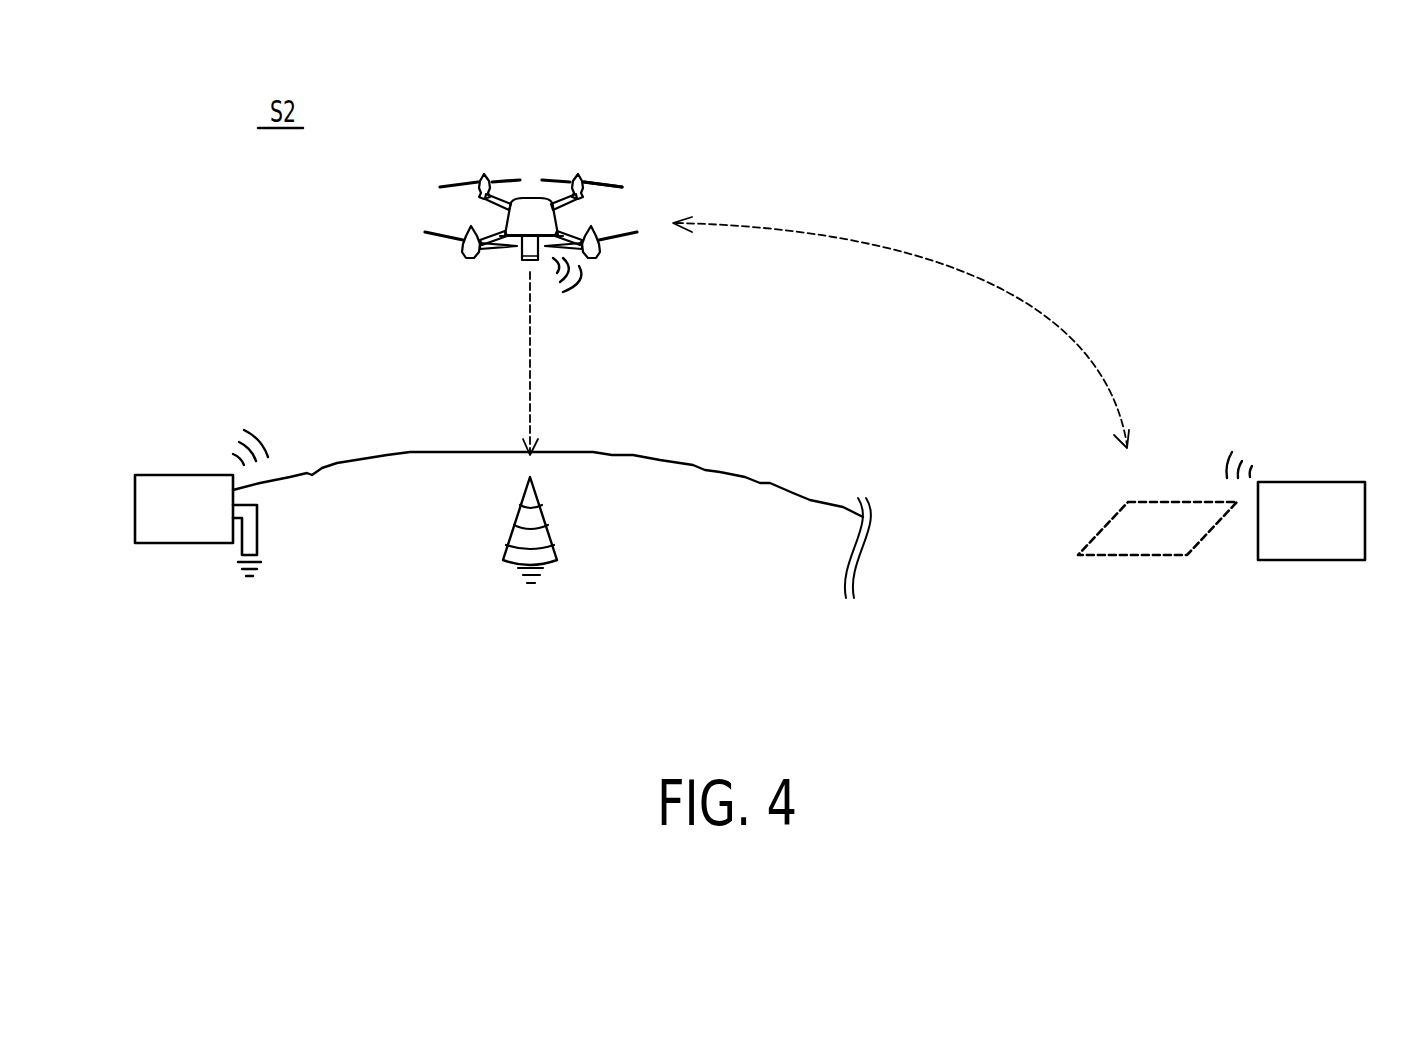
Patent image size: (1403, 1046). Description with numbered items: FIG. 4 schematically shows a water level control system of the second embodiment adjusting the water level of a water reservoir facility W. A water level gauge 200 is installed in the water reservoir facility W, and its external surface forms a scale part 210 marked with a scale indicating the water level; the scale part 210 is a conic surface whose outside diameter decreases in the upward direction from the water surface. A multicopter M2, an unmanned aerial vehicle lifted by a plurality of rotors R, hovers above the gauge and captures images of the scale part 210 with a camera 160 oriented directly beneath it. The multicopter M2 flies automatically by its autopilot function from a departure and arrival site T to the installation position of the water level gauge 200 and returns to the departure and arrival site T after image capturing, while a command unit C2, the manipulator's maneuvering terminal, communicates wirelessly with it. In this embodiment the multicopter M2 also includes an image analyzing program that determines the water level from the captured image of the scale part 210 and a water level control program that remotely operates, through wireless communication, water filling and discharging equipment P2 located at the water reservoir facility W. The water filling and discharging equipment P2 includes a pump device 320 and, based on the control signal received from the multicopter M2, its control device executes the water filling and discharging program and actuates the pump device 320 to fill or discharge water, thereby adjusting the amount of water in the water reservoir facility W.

The camera 160 is at (528, 247).
The water level gauge 200 is at (454, 492).
The scale part 210 is at (530, 530).
The pump device 320 is at (272, 540).
The multicopter M2 is at (547, 234).
The rotor R is at (627, 233).
The water reservoir facility W is at (552, 504).
The water filling and discharging equipment P2 is at (184, 491).
The departure and arrival site T is at (1157, 509).
The command unit C2 is at (1311, 504).